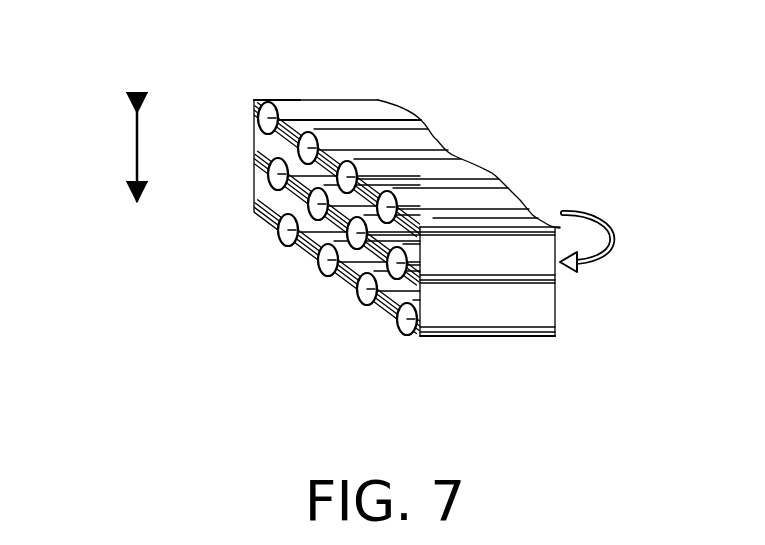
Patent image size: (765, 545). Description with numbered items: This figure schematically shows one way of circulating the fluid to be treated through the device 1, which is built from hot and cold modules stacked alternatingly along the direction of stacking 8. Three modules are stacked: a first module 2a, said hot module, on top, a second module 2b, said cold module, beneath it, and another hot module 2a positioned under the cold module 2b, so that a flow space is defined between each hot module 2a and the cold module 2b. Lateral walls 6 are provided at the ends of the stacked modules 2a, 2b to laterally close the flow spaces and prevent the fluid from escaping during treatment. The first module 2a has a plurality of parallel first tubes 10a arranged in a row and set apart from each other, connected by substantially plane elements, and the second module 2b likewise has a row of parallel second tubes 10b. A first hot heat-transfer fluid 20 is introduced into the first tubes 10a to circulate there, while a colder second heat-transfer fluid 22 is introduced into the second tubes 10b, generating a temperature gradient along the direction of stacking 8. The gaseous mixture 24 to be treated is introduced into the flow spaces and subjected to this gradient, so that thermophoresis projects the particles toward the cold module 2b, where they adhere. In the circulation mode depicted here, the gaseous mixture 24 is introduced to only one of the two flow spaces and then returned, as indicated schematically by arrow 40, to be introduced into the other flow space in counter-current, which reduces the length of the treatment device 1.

The device 1 is at (497, 142).
The first module 2a is at (262, 97).
The second module 2b is at (548, 282).
The lateral walls 6 is at (347, 99).
The direction of stacking 8 is at (132, 152).
The first tubes 10a is at (278, 120).
The second tubes 10b is at (370, 264).
The first hot heat-transfer fluid 20 is at (258, 118).
The second heat-transfer fluid 22 is at (268, 177).
The gaseous mixture 24 is at (343, 203).
The arrow 40 is at (600, 262).